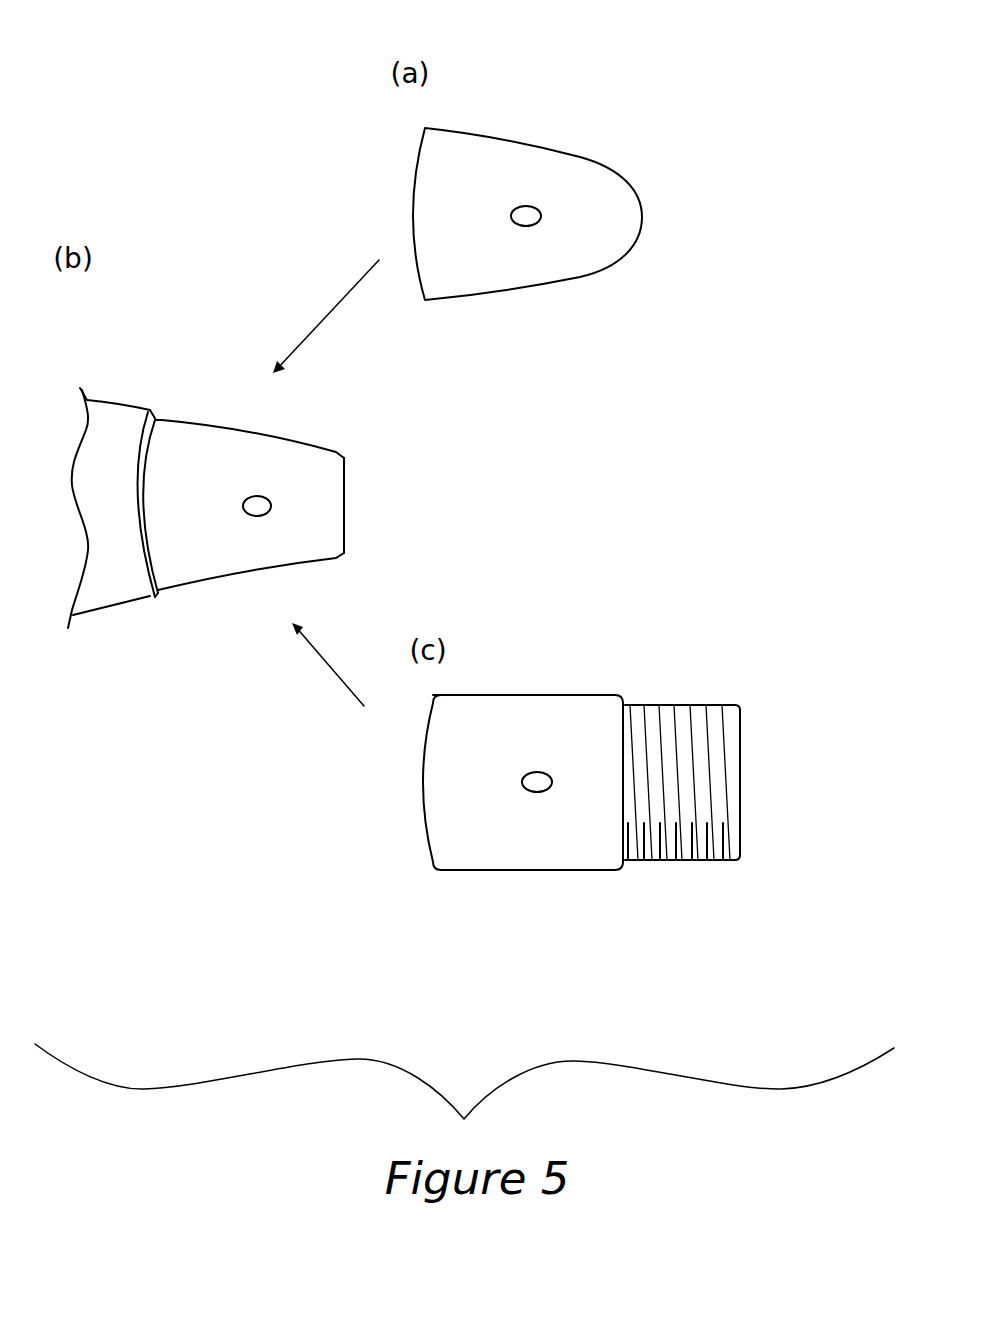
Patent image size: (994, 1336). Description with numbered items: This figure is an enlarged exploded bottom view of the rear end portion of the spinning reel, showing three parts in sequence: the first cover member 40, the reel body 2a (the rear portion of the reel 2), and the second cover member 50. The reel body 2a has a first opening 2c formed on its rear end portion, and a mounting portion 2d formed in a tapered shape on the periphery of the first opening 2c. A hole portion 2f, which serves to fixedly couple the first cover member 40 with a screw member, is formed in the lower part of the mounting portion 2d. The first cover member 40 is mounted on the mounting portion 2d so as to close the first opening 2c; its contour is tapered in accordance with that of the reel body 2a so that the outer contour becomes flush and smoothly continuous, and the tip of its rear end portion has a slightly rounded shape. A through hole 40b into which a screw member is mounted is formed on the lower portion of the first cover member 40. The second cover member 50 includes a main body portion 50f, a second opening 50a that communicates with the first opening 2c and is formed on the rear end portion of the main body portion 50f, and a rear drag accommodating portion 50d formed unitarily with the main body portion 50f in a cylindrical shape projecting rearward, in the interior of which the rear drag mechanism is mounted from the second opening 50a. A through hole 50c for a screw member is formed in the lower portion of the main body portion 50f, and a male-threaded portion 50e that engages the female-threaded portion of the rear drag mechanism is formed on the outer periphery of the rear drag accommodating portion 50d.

The reel body 2 is at (158, 337).
The reel body 2a is at (115, 423).
The first opening 2c is at (345, 511).
The mounting portion 2d is at (179, 567).
The hole portion 2f is at (259, 517).
The first cover member 40 is at (630, 167).
The through hole 40b is at (537, 226).
The second cover member 50 is at (623, 670).
The second opening 50a is at (742, 820).
The through hole 50c is at (533, 794).
The rear drag accommodating portion 50d is at (697, 704).
The male-threaded portion 50e is at (728, 738).
The main body portion 50f is at (520, 705).